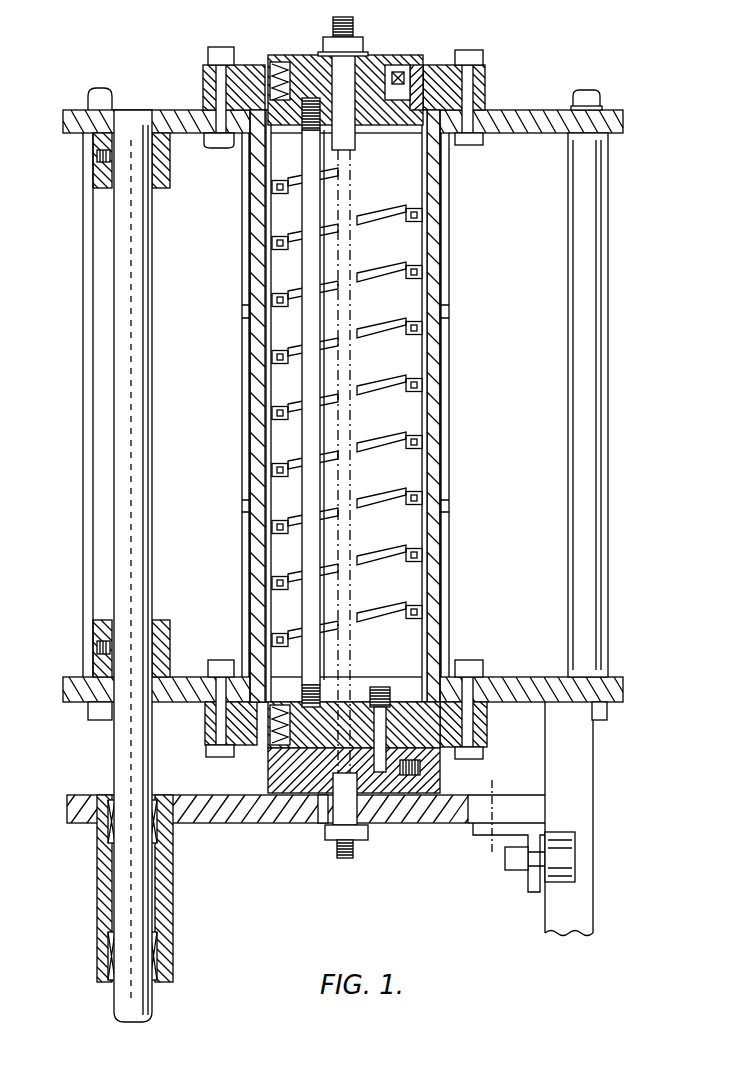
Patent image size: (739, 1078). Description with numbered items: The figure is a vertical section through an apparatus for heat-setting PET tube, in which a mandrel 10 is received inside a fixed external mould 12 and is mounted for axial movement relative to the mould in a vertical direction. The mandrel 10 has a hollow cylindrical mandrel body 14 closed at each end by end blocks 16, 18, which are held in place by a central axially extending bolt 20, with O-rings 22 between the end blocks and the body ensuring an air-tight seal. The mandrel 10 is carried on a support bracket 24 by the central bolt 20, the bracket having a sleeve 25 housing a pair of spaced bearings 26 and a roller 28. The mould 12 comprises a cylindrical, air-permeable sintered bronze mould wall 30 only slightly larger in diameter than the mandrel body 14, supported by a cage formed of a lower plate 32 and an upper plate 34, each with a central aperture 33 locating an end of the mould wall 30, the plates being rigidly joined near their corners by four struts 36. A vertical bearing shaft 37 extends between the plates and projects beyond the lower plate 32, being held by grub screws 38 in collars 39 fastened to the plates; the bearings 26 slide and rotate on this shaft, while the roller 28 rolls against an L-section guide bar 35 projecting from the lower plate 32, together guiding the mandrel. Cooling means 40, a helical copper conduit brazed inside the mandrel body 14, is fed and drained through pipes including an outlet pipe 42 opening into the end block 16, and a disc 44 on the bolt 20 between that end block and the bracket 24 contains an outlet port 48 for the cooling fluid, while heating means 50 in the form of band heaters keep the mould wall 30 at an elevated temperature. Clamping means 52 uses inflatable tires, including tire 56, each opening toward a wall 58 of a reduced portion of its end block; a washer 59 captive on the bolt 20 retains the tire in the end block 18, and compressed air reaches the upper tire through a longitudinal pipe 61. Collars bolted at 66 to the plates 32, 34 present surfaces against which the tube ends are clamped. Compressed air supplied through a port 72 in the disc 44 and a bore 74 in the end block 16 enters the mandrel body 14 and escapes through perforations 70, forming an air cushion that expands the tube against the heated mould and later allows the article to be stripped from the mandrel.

The mandrel 10 is at (410, 142).
The external mould 12 is at (444, 175).
The mandrel body 14 is at (430, 632).
The end block 16 is at (395, 702).
The end block 18 is at (373, 82).
The central bolt 20 is at (337, 84).
The O-rings 22 is at (270, 124).
The support bracket 24 is at (261, 812).
The sleeve 25 is at (168, 896).
The bearings 26 is at (108, 838).
The roller 28 is at (565, 866).
The mould wall 30 is at (262, 347).
The lower plate 32 is at (510, 705).
The aperture 33 is at (438, 102).
The upper plate 34 is at (513, 117).
The guide bar 35 is at (574, 781).
The struts 36 is at (588, 207).
The bearing shaft 37 is at (118, 290).
The grub screws 38 is at (97, 648).
The collars 39 is at (96, 176).
The cooling means 40 is at (393, 439).
The outlet pipe 42 is at (353, 195).
The disc 44 is at (396, 795).
The outlet port 48 is at (317, 803).
The heating means 50 is at (243, 469).
The clamping means 52 is at (258, 753).
The inflatable tire 56 is at (425, 69).
The wall 58 is at (383, 69).
The washer 59 is at (287, 61).
The longitudinal pipe 61 is at (310, 550).
The bolts 66 is at (220, 87).
The perforations 70 is at (270, 609).
The port 72 is at (422, 776).
The bore 74 is at (378, 704).